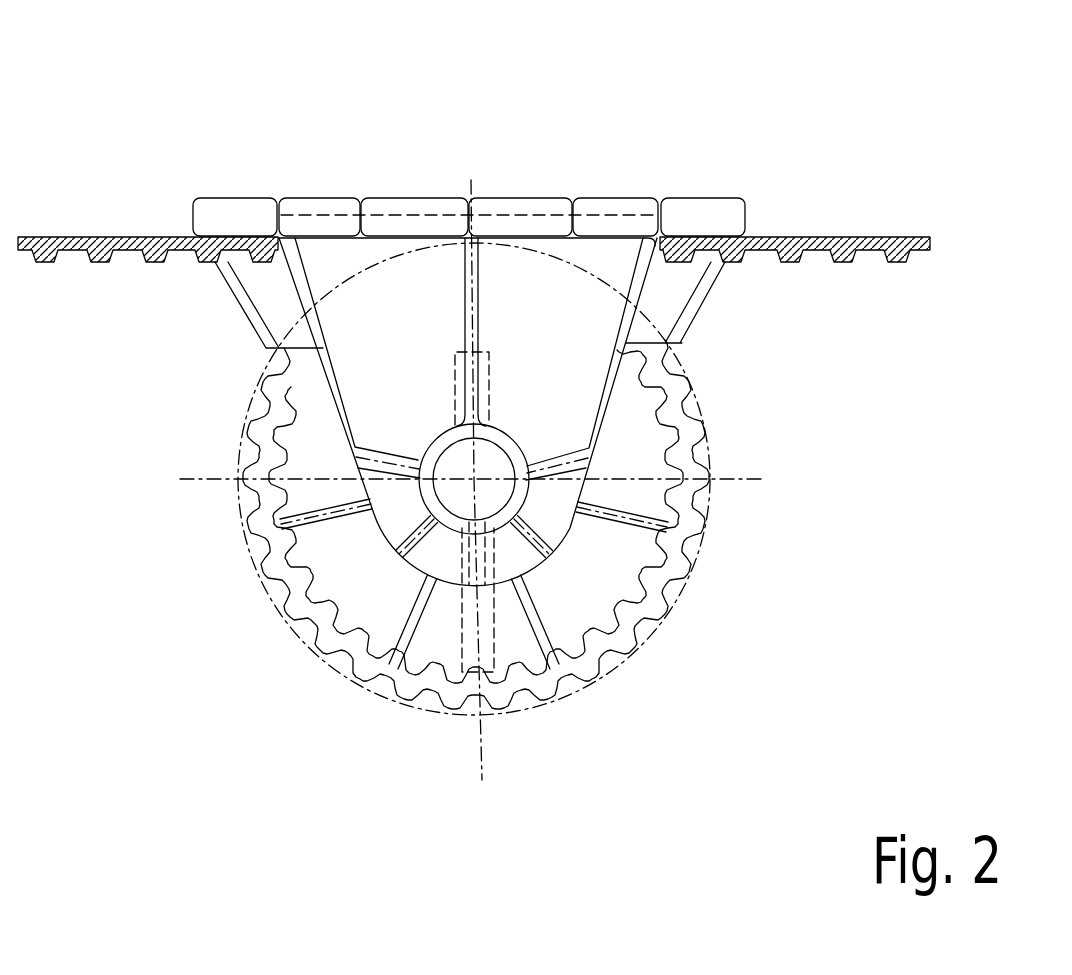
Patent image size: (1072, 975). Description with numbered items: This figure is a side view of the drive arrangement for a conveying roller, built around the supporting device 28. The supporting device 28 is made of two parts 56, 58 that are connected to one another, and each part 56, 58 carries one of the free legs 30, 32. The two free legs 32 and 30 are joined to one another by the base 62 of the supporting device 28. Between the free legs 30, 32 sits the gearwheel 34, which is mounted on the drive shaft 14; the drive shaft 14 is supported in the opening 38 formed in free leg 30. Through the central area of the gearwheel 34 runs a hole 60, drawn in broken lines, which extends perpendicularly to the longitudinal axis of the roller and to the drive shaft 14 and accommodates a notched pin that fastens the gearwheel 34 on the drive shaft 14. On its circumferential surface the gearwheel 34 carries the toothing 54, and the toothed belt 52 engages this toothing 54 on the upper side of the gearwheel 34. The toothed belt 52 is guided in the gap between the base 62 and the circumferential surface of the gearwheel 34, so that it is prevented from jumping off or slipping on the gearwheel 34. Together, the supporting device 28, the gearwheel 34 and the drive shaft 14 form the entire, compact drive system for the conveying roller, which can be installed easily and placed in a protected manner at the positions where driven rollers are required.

The drive shaft 14 is at (458, 470).
The supporting device 28 is at (645, 196).
The free leg 30 is at (587, 332).
The free leg 32 is at (270, 293).
The gearwheel 34 is at (645, 456).
The opening 38 is at (510, 510).
The toothed belt 52 is at (825, 235).
The toothing 54 is at (573, 682).
The part 56 is at (233, 219).
The part 58 is at (335, 207).
The hole 60 is at (472, 624).
The base 62 is at (480, 216).